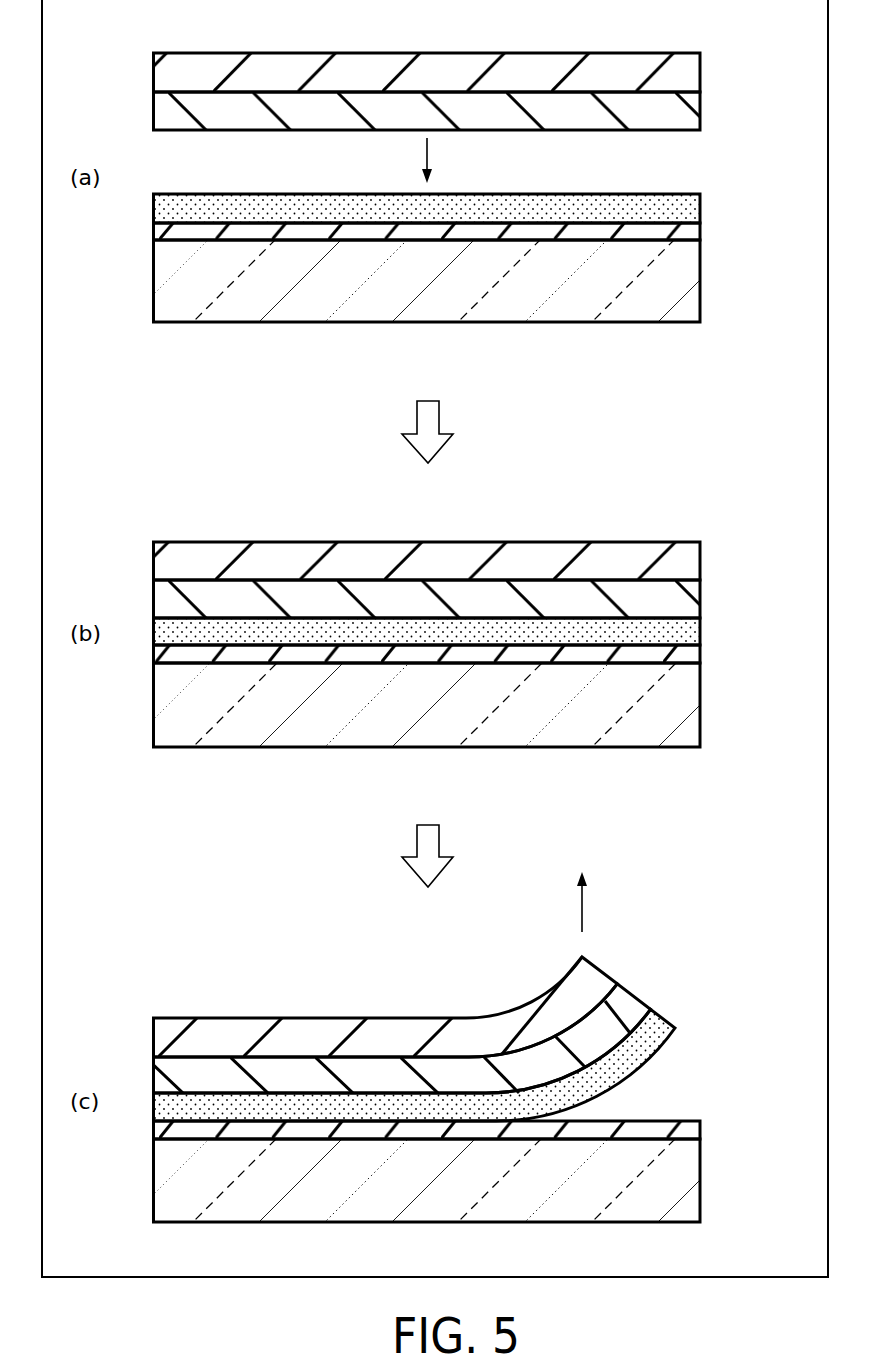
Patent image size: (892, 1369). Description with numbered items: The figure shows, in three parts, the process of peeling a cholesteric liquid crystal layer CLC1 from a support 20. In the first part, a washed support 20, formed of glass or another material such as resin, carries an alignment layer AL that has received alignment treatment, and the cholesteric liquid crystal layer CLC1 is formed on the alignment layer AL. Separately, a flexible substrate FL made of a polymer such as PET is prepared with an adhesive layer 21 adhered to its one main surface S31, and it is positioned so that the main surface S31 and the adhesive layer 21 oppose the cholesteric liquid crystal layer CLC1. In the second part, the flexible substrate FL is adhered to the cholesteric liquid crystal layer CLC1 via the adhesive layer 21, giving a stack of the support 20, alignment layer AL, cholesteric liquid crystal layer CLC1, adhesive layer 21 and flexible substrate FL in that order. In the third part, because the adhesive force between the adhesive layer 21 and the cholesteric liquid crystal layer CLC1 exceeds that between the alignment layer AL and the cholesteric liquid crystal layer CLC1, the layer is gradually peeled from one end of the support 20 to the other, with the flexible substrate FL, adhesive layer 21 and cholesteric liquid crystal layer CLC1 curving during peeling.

The flexible substrate FL is at (695, 72).
The adhesive layer 21 is at (690, 100).
The cholesteric liquid crystal layer CLC1 is at (690, 205).
The alignment layer AL is at (690, 233).
The support 20 is at (690, 271).
The main surface S31 is at (540, 93).